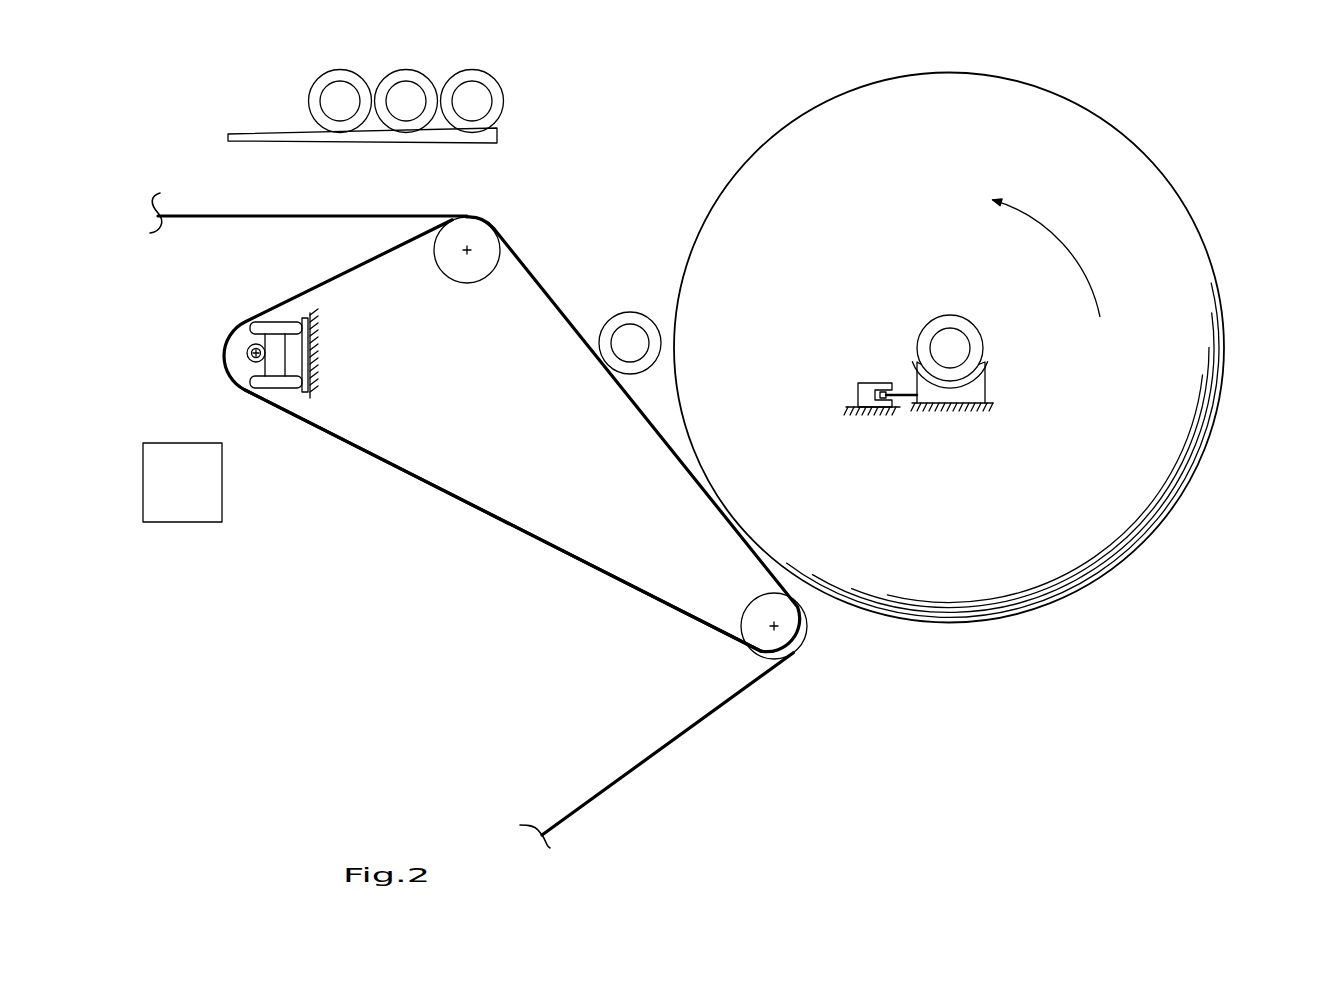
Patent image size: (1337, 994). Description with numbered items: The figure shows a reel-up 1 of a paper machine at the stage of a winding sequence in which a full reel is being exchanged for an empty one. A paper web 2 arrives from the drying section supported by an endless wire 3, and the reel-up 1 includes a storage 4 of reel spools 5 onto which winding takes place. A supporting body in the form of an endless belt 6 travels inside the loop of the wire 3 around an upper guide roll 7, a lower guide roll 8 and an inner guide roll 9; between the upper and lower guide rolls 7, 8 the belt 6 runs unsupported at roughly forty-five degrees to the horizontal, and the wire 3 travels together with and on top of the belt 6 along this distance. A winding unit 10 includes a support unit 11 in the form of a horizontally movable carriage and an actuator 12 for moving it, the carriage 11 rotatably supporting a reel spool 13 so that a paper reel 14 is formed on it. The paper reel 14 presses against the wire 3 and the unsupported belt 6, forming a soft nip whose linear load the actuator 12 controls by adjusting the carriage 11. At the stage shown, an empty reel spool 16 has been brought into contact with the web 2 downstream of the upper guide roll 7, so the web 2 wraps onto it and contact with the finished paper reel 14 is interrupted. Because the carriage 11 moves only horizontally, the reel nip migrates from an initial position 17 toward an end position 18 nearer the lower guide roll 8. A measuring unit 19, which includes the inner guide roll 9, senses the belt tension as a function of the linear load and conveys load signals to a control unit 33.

The reel-up 1 is at (294, 694).
The paper web 2 is at (523, 265).
The endless wire 3 is at (284, 217).
The storage 4 is at (554, 117).
The reel spools 5 is at (315, 104).
The endless belt 6 is at (495, 513).
The upper guide roll 7 is at (470, 273).
The lower guide roll 8 is at (752, 617).
The inner guide roll 9 is at (230, 355).
The winding unit 10 is at (1252, 291).
The support unit 11 is at (977, 390).
The actuator 12 is at (862, 381).
The reel spool 13 is at (945, 320).
The paper reel 14 is at (1193, 472).
The empty reel spool 16 is at (631, 312).
The initial position 17 is at (585, 329).
The end position 18 is at (679, 441).
The measuring unit 19 is at (336, 340).
The control unit 33 is at (223, 485).